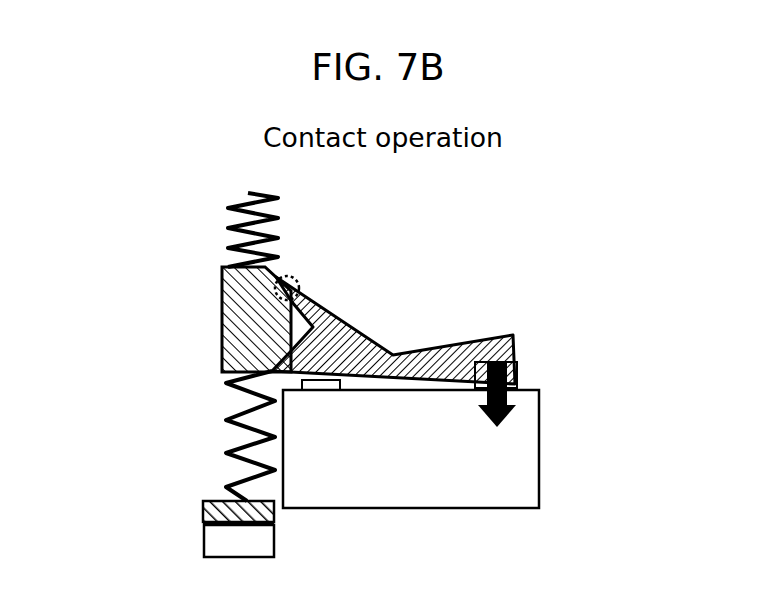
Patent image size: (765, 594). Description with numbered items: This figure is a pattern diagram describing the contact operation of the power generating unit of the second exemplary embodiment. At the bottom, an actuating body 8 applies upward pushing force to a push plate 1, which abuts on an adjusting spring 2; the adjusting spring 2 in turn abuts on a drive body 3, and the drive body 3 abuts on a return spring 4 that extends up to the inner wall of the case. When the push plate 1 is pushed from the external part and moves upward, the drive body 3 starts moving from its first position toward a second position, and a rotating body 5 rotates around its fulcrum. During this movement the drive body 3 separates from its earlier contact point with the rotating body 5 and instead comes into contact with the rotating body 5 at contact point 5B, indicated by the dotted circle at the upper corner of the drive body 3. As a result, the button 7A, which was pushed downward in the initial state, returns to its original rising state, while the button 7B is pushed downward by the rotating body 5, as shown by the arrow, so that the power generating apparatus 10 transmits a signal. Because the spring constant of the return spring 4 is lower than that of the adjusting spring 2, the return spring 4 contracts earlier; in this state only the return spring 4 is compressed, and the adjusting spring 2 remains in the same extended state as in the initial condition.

The push plate 1 is at (205, 513).
The adjusting spring 2 is at (226, 421).
The drive body 3 is at (227, 317).
The return spring 4 is at (238, 222).
The rotating body 5 is at (455, 346).
The contact point 5B is at (296, 276).
The button 7A is at (341, 383).
The button 7B is at (514, 373).
The actuating body 8 is at (230, 538).
The power generating apparatus 10 is at (368, 480).